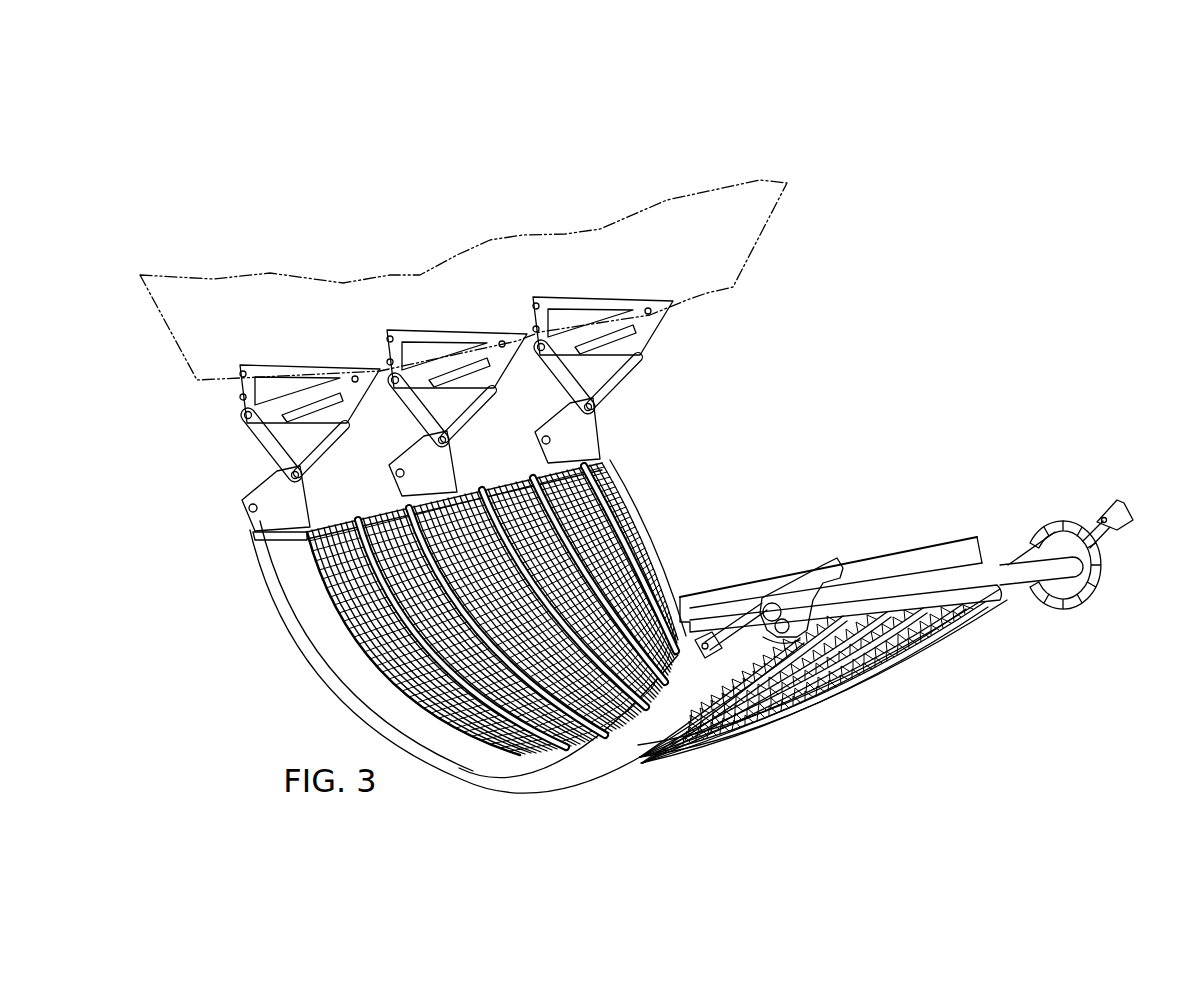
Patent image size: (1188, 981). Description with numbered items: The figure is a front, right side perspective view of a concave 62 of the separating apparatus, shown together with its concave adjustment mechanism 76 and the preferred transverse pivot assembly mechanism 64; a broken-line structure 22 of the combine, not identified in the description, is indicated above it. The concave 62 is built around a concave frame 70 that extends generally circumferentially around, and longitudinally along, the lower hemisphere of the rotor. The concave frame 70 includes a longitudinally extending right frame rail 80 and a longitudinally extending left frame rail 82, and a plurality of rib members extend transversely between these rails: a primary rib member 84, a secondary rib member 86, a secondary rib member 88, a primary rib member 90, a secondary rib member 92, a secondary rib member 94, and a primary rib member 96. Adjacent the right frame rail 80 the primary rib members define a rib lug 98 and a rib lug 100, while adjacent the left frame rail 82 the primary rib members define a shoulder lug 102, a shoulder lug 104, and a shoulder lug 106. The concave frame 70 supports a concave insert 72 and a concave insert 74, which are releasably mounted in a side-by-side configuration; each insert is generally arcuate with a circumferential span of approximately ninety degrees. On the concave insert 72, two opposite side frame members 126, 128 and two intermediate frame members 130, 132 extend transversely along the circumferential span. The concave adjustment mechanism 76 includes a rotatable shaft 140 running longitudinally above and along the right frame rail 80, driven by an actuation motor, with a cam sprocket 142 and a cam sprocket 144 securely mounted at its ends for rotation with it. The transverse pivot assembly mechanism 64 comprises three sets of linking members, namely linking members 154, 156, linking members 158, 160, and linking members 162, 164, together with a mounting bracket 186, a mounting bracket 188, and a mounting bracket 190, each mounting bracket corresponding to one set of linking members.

The combine frame (phantom) 22 is at (523, 235).
The concave 62 is at (633, 648).
The transverse pivot assembly mechanism 64 is at (403, 373).
The concave frame 70 is at (463, 779).
The concave insert 72 is at (389, 639).
The concave insert 74 is at (628, 576).
The concave adjustment mechanism 76 is at (1130, 472).
The right frame rail 80 is at (922, 590).
The left frame rail 82 is at (560, 470).
The primary rib member 84 is at (650, 733).
The secondary rib member 86 is at (692, 735).
The secondary rib member 88 is at (735, 710).
The primary rib member 90 is at (790, 695).
The secondary rib member 92 is at (850, 680).
The secondary rib member 94 is at (890, 675).
The primary rib member 96 is at (950, 665).
The rib lug 98 is at (708, 648).
The rib lug 100 is at (1010, 565).
The shoulder lug 102 is at (252, 523).
The shoulder lug 104 is at (432, 483).
The shoulder lug 106 is at (612, 428).
The side frame member 126 is at (340, 613).
The side frame member 128 is at (489, 601).
The intermediate frame member 130 is at (392, 557).
The intermediate frame member 132 is at (430, 580).
The rotatable shaft 140 is at (870, 607).
The cam sprocket 142 is at (758, 595).
The cam sprocket 144 is at (1066, 520).
The linking member 154 is at (262, 437).
The linking member 156 is at (327, 460).
The linking member 158 is at (404, 429).
The linking member 160 is at (470, 406).
The linking member 162 is at (554, 397).
The linking member 164 is at (611, 367).
The mounting bracket 186 is at (270, 345).
The mounting bracket 188 is at (435, 306).
The mounting bracket 190 is at (589, 276).